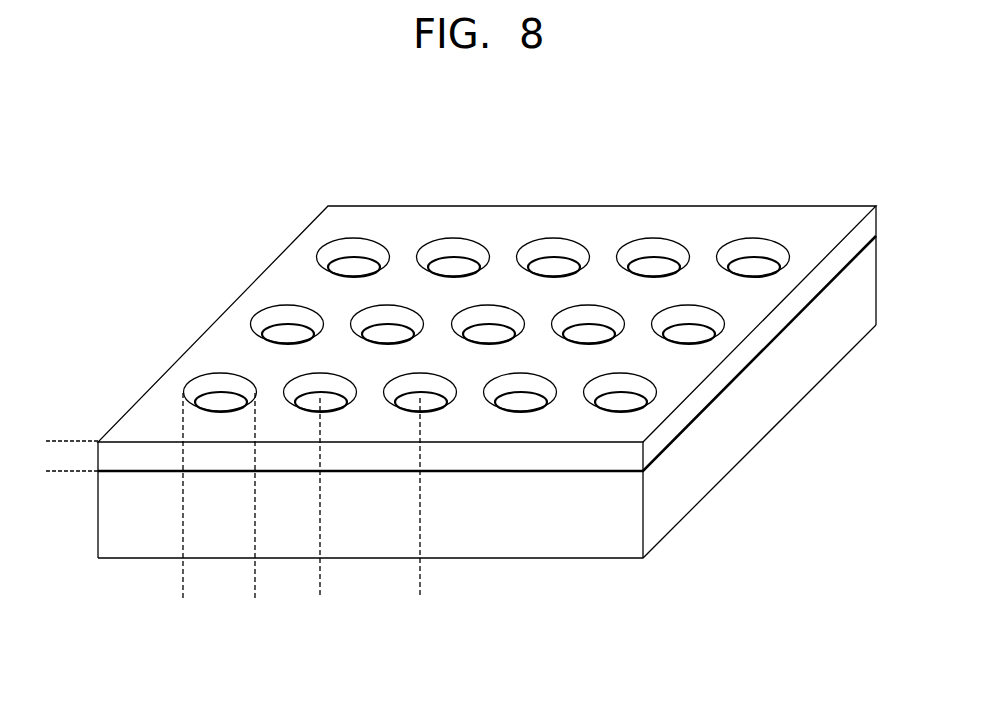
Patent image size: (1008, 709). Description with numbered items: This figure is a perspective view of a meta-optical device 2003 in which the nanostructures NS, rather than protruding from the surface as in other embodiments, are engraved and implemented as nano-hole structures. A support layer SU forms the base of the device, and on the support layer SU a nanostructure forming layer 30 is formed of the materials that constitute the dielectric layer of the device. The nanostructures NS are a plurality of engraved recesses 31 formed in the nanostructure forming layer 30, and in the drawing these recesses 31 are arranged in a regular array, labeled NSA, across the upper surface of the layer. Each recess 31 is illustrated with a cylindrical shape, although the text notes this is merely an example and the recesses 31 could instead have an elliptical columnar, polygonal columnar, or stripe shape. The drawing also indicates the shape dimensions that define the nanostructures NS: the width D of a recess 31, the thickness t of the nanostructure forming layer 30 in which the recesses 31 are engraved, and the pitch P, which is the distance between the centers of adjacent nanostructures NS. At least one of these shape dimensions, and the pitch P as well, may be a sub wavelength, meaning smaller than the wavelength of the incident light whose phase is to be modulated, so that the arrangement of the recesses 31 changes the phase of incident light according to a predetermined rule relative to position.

The meta-optical device 2003 is at (770, 166).
The nanostructures NS is at (185, 215).
The nanostructure forming layer 30 is at (265, 271).
The recesses 31 is at (352, 257).
The nanostructure array NSA is at (183, 346).
The support layer SU is at (670, 512).
The thickness t is at (54, 410).
The width D is at (255, 592).
The pitch P is at (420, 592).